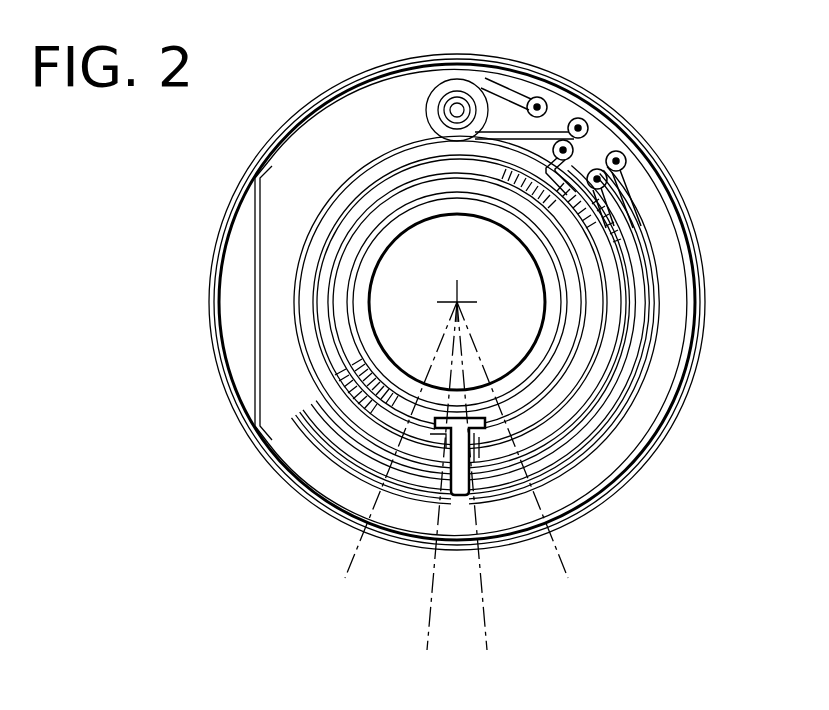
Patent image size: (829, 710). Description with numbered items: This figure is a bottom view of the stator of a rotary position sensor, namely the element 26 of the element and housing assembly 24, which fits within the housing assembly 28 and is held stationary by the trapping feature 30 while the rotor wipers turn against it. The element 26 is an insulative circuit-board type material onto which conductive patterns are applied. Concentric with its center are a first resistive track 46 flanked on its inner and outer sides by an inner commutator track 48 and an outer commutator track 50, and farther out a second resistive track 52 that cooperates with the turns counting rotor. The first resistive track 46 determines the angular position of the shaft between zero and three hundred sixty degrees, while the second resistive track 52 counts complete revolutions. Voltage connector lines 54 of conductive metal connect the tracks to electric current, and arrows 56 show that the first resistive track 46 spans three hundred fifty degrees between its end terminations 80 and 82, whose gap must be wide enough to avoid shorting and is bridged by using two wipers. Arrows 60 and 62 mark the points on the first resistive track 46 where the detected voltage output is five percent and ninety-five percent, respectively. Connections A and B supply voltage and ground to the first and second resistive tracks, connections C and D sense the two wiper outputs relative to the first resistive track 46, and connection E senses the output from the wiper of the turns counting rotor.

The element and housing assembly 24 is at (580, 68).
The element 26 is at (287, 425).
The housing assembly 28 is at (212, 295).
The trapping feature 30 is at (233, 248).
The first resistive track 46 is at (373, 197).
The inner commutator track 48 is at (570, 283).
The outer commutator track 50 is at (607, 298).
The second resistive track 52 is at (420, 97).
The voltage connector lines 54 is at (654, 364).
The arrows 56 is at (494, 630).
The arrow 60 is at (575, 557).
The arrow 62 is at (340, 554).
The end termination 80 is at (440, 443).
The end termination 82 is at (474, 437).
The connection A is at (586, 122).
The connection B is at (625, 158).
The connection C is at (606, 181).
The connection D is at (572, 147).
The connection E is at (565, 100).